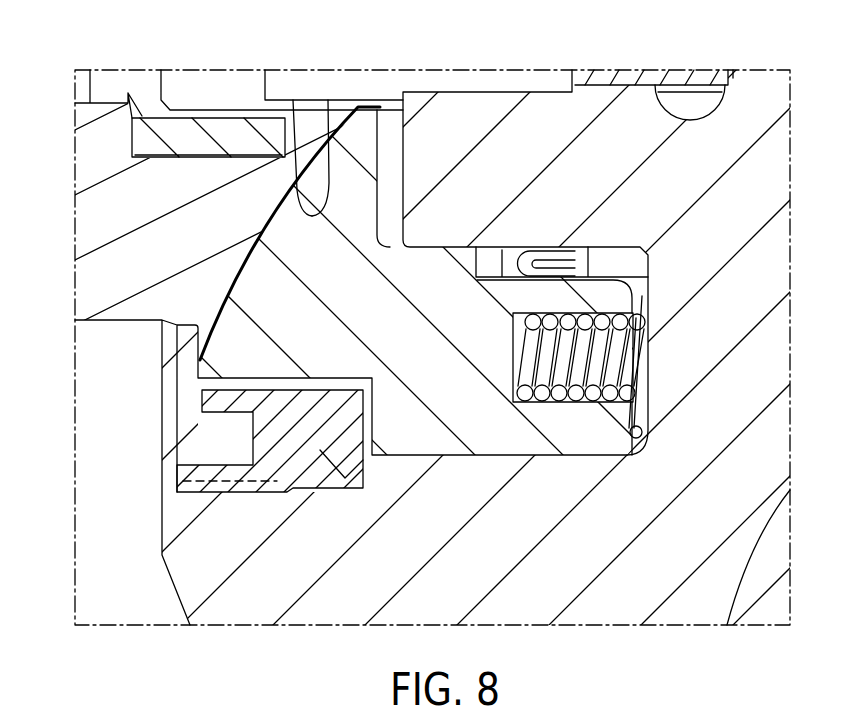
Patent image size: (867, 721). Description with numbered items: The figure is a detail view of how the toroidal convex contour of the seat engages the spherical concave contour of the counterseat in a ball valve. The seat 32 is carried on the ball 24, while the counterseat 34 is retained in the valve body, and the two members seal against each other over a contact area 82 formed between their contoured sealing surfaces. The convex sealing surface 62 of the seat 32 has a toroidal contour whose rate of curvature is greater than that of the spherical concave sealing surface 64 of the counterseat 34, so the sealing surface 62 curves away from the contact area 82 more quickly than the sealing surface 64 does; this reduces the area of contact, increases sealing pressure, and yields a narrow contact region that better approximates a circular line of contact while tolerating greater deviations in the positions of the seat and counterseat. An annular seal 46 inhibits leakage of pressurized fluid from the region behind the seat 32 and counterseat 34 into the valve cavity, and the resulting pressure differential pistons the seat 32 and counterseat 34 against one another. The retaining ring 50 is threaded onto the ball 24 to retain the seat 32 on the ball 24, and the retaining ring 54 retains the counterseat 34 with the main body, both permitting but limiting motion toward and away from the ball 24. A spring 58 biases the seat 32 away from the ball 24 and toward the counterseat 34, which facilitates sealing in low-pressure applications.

The ball 24 is at (773, 178).
The seat 32 is at (247, 343).
The counterseat 34 is at (92, 160).
The annular seal 46 is at (517, 257).
The retaining ring 50 is at (247, 402).
The retaining ring 54 is at (208, 132).
The spring 58 is at (597, 358).
The convex sealing surface 62 is at (293, 100).
The concave sealing surface 64 is at (328, 100).
The contact area 82 is at (232, 265).